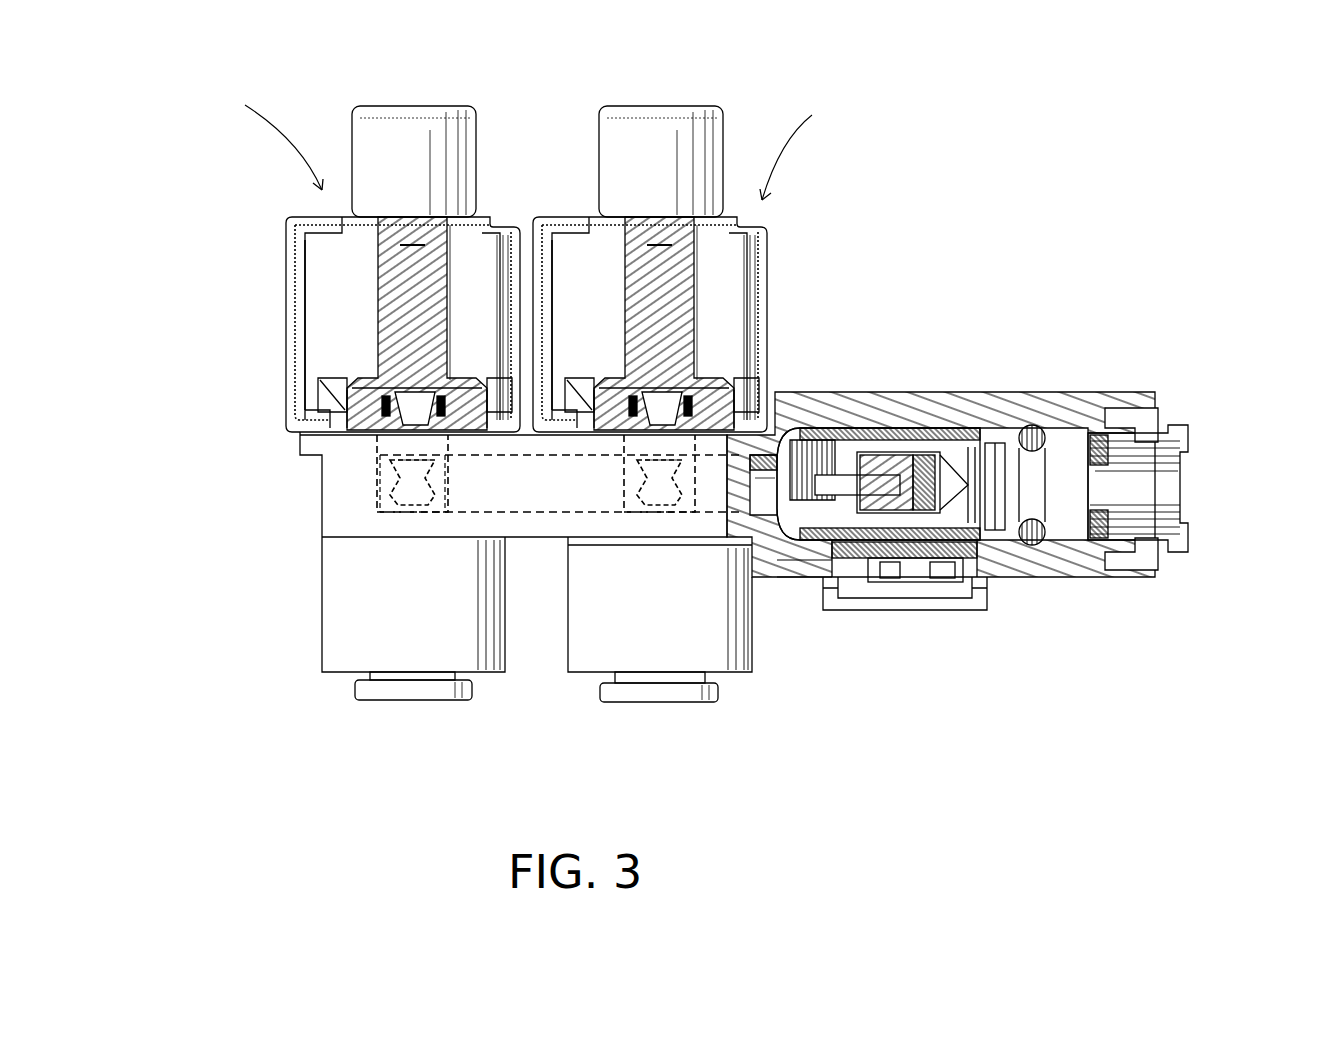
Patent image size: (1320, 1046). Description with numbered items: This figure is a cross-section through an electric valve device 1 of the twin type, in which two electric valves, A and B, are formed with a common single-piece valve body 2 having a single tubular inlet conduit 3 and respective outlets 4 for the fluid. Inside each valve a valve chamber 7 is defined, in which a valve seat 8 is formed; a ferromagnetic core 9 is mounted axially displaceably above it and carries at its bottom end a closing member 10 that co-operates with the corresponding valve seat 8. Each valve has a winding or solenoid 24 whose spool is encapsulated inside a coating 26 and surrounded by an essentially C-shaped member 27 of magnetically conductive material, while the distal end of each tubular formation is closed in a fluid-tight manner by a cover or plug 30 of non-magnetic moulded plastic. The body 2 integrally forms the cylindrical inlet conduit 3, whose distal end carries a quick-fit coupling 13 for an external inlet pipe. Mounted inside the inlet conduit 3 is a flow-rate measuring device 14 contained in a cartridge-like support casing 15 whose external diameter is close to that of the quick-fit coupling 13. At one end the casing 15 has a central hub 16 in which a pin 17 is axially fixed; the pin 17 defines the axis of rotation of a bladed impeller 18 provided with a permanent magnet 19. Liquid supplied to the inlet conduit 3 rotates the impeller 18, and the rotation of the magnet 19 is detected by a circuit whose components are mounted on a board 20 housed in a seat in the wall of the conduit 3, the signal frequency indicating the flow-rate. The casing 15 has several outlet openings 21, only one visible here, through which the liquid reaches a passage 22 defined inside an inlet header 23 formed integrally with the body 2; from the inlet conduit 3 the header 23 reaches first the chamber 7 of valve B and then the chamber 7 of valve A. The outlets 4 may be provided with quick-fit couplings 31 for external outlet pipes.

The electric valve device 1 is at (975, 252).
The valve body 2 is at (315, 560).
The tubular inlet conduit 3 is at (1035, 392).
The outlet 4 is at (490, 680).
The valve chamber 7 is at (380, 500).
The valve seat 8 is at (385, 462).
The ferromagnetic core 9 is at (330, 447).
The closing member 10 is at (390, 480).
The quick-fit coupling 13 is at (1175, 480).
The flow-rate measuring device 14 is at (1038, 545).
The support casing 15 is at (880, 440).
The central hub 16 is at (868, 585).
The pin 17 is at (850, 440).
The bladed impeller 18 is at (965, 420).
The permanent magnet 19 is at (1015, 545).
The board 20 is at (940, 610).
The outlet opening 21 is at (808, 577).
The passage 22 is at (455, 512).
The inlet header 23 is at (500, 600).
The winding or solenoid 24 is at (340, 268).
The coating 26 is at (330, 345).
The magnetically conductive member 27 is at (300, 385).
The cover or plug 30 is at (375, 118).
The quick-fit coupling 31 is at (385, 690).